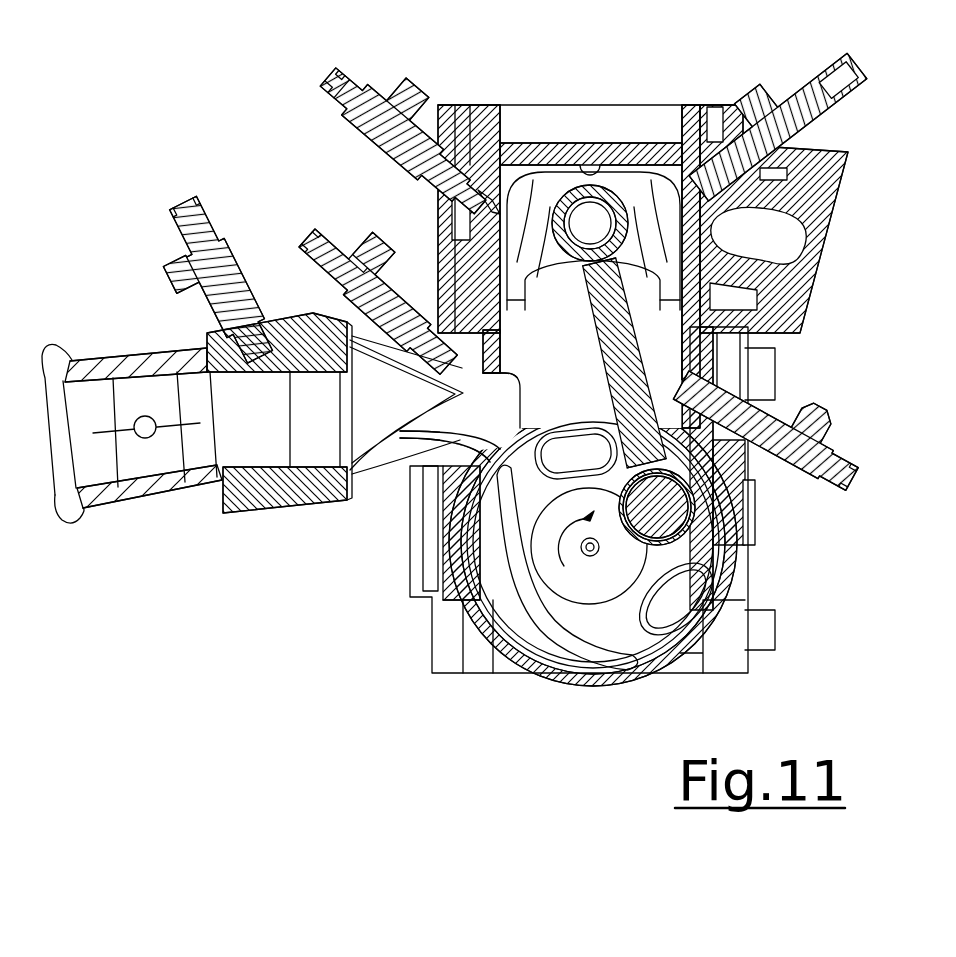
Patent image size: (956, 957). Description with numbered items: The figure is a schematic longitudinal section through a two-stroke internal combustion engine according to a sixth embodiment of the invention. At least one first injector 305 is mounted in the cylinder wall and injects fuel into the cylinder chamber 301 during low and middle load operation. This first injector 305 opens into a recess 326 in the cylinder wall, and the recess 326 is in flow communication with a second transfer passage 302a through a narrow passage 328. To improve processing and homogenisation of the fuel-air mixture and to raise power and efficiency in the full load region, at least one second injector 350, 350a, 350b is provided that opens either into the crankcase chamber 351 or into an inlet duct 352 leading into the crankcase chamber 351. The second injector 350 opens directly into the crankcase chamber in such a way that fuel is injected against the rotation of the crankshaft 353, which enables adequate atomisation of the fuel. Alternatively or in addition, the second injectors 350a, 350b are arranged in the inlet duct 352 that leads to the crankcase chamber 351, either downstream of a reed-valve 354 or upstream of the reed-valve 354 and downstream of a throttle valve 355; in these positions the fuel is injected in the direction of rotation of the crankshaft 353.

The cylinder chamber 301 is at (612, 125).
The second transfer passage 302a is at (488, 215).
The first injector 305 is at (373, 100).
The recess 326 is at (497, 207).
The narrow passage 328 is at (492, 212).
The second injector 350 is at (817, 465).
The second injector 350a is at (335, 258).
The second injector 350b is at (228, 272).
The crankcase chamber 351 is at (408, 508).
The inlet duct 352 is at (205, 462).
The crankshaft 353 is at (670, 518).
The reed-valve 354 is at (430, 421).
The throttle valve 355 is at (127, 432).